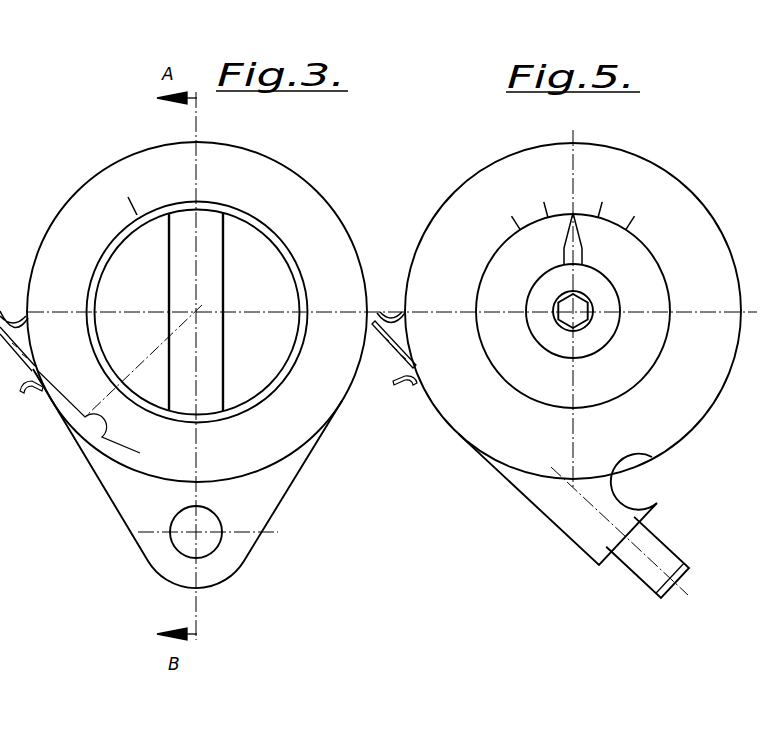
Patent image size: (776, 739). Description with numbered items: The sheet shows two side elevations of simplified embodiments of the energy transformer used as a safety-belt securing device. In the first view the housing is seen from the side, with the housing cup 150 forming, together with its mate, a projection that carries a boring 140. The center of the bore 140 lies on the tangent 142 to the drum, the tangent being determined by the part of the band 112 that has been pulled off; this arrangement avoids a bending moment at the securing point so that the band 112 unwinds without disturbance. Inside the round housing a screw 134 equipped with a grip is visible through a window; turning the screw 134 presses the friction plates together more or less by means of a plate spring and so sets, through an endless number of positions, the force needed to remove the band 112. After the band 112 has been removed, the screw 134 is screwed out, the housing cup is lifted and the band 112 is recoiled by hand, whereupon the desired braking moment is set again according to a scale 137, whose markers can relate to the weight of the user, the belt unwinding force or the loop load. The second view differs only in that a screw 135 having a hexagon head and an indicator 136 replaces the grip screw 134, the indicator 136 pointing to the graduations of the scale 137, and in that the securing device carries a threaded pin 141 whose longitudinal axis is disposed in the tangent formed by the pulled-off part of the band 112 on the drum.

In FIG. 3, the band 112 is at (390, 347).
In FIG. 3, the screw 134 is at (215, 258).
In FIG. 5, the screw having a hexagon head 135 is at (588, 280).
In FIG. 5, the indicator 136 is at (575, 238).
In FIG. 3, the scale 137 is at (255, 210).
In FIG. 5, the scale 137 is at (544, 203).
In FIG. 3, the boring 140 is at (172, 545).
In FIG. 5, the threaded pin 141 is at (657, 577).
In FIG. 3, the tangent 142 is at (208, 548).
In FIG. 3, the housing cup 150 is at (140, 452).